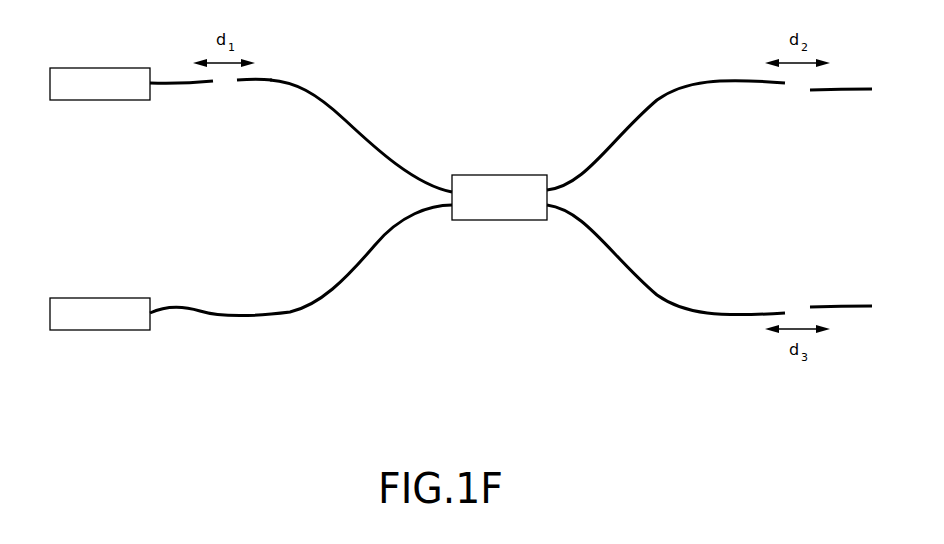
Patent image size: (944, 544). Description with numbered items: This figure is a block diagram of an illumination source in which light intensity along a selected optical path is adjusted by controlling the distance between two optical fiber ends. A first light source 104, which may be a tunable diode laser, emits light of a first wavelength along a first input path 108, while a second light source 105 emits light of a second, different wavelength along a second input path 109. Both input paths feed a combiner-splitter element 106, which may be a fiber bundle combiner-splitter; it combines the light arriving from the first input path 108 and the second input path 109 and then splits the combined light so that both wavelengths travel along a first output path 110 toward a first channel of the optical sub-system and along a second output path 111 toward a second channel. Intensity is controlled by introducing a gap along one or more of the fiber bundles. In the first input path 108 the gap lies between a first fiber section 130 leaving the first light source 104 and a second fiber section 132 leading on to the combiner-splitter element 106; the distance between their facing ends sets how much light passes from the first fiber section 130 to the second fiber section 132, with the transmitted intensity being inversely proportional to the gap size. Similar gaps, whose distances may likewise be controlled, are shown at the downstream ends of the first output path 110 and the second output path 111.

The first light source 104 is at (100, 68).
The second light source 105 is at (100, 298).
The combiner-splitter element 106 is at (500, 175).
The first input path 108 is at (327, 95).
The second input path 109 is at (327, 303).
The first output path 110 is at (673, 95).
The second output path 111 is at (673, 300).
The first fiber section 130 is at (195, 86).
The second fiber section 132 is at (247, 82).